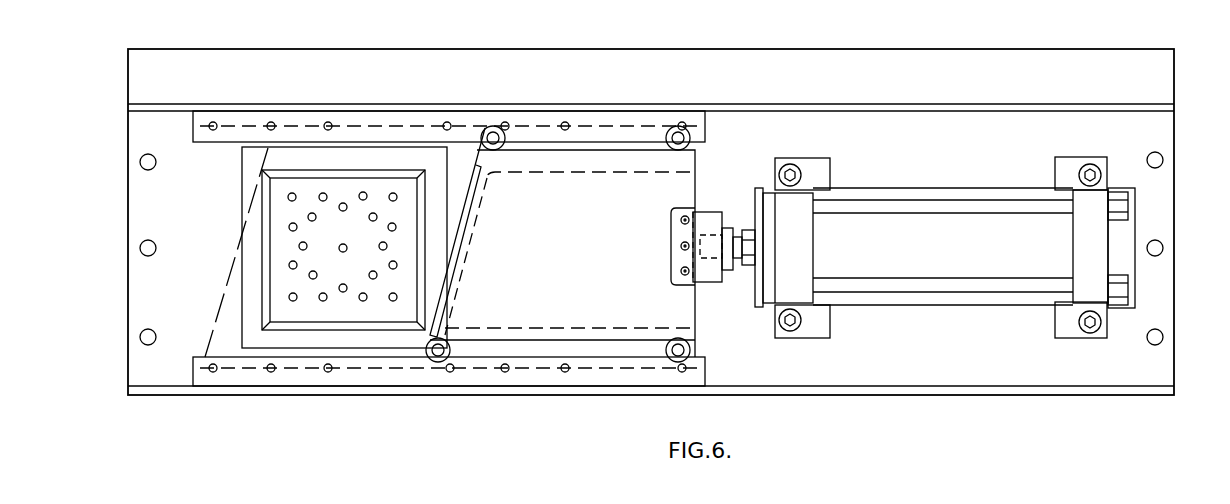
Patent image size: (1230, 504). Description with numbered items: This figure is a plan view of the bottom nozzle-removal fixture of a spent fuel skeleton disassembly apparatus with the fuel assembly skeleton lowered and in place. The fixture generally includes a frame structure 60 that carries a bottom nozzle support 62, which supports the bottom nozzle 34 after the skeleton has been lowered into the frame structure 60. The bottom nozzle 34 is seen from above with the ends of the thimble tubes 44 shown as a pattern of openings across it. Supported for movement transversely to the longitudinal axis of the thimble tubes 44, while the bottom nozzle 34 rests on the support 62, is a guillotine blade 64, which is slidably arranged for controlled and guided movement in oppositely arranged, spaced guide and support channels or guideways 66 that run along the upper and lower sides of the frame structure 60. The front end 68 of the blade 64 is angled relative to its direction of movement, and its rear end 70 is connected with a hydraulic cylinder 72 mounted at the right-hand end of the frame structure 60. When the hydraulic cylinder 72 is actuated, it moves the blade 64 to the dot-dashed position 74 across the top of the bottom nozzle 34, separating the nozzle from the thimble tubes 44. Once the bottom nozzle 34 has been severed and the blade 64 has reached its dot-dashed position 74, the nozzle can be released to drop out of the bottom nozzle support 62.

The frame structure 60 is at (294, 93).
The bottom nozzle 34 is at (350, 190).
The thimble tubes 44 is at (368, 196).
The guide and support channels 66 is at (700, 130).
The hydraulic cylinder 72 is at (920, 200).
The rear end 70 is at (693, 182).
The front end 68 is at (463, 221).
The guillotine blade 64 is at (603, 250).
The dot-dashed position 74 is at (230, 262).
The bottom nozzle support 62 is at (302, 345).